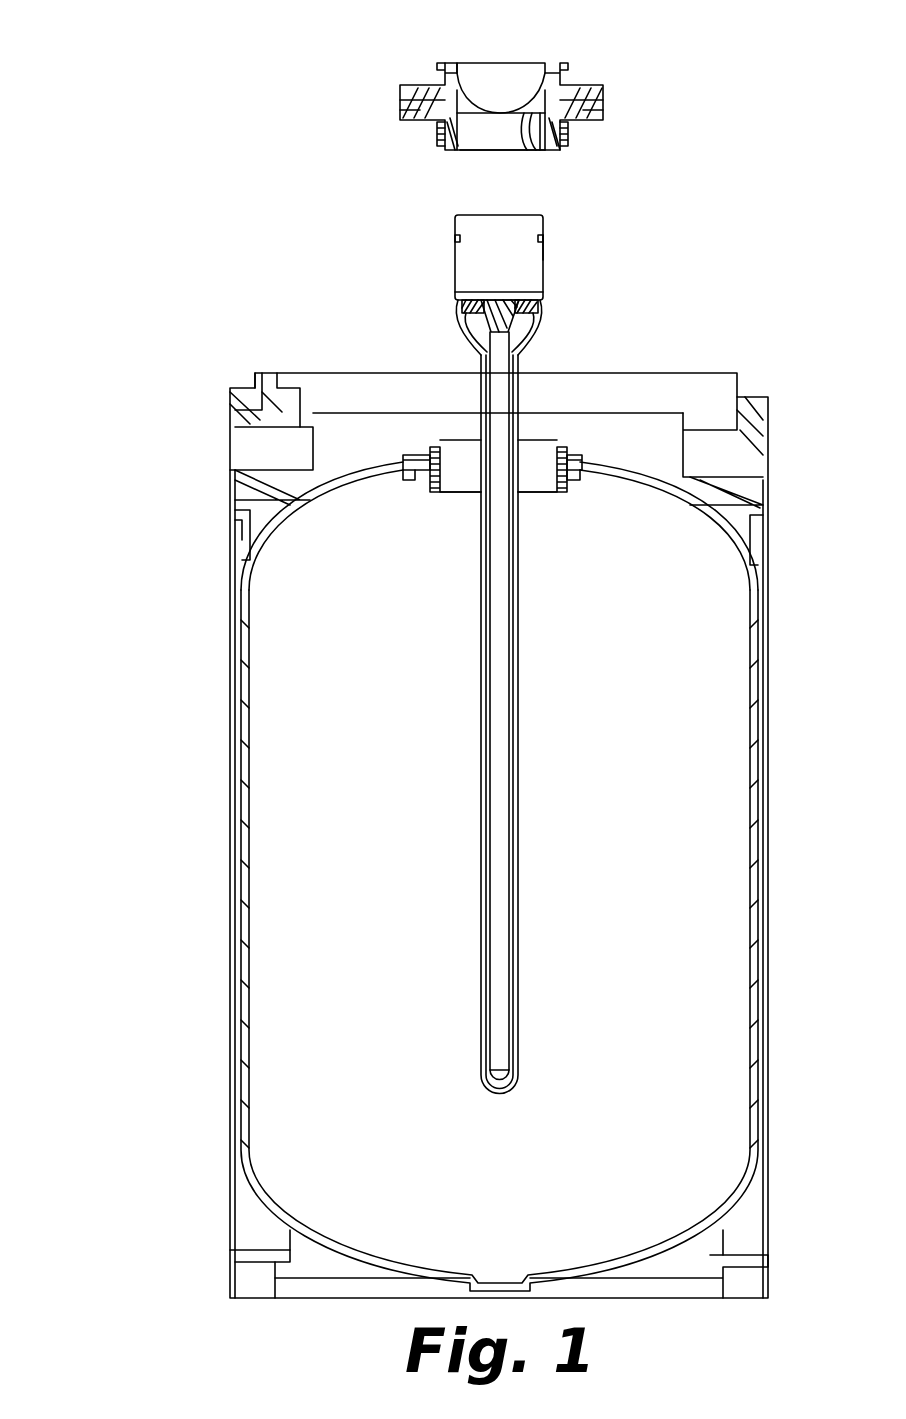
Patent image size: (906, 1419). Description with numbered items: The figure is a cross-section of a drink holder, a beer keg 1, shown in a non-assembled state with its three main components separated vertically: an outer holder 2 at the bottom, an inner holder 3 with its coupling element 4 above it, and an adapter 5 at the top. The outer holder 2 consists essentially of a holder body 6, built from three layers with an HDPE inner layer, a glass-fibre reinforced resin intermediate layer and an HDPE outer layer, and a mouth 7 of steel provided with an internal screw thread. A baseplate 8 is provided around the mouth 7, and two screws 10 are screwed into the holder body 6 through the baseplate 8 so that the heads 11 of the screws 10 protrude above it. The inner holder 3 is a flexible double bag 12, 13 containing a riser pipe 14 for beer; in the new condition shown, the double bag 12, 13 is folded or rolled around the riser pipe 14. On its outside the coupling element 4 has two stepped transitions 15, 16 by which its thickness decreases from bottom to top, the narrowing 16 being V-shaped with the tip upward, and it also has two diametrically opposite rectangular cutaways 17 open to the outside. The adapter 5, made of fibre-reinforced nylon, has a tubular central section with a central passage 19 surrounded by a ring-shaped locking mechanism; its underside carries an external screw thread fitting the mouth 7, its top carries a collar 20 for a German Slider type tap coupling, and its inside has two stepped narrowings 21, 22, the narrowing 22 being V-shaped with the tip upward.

The beer keg 1 is at (112, 52).
The outer holder 2 is at (205, 490).
The inner holder 3 is at (410, 274).
The coupling element 4 is at (527, 257).
The adapter 5 is at (560, 52).
The holder body 6 is at (340, 478).
The mouth 7 is at (438, 448).
The baseplate 8 is at (404, 456).
The screws 10 is at (420, 500).
The heads 11 is at (418, 455).
The double bag 12 is at (522, 316).
The double bag 13 is at (528, 306).
The riser pipe 14 is at (492, 355).
The stepped transition 15 is at (545, 268).
The stepped transition 16 is at (543, 240).
The rectangular cutaways 17 is at (455, 238).
The central passage 19 is at (478, 137).
The collar 20 is at (450, 68).
The stepped narrowing 21 is at (540, 150).
The stepped narrowing 22 is at (530, 150).